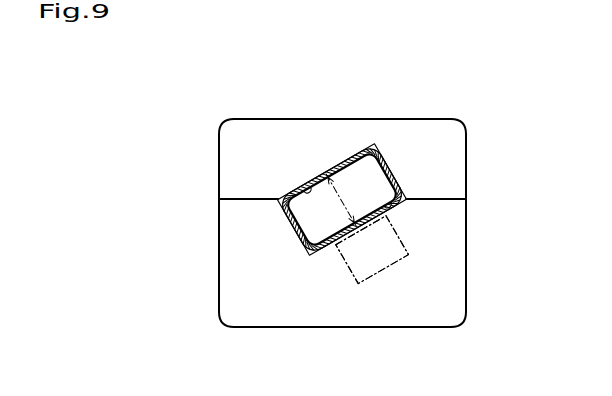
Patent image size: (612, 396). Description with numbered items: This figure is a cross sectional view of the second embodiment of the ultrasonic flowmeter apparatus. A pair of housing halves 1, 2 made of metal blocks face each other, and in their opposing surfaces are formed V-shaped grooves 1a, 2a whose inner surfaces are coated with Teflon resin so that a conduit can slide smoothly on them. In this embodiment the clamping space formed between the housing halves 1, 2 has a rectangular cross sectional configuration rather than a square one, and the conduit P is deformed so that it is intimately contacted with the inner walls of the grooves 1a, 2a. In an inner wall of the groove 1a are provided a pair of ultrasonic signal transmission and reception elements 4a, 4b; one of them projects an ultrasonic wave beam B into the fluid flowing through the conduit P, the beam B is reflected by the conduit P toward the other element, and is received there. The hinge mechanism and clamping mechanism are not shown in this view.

The housing half 1 is at (449, 291).
The V-shaped groove 1a is at (403, 202).
The housing half 2 is at (415, 138).
The V-shaped groove 2a is at (296, 190).
The conduit P is at (348, 154).
The ultrasonic wave beam B is at (343, 200).
The ultrasonic signal transmission and reception element 4a is at (375, 258).
The ultrasonic signal transmission and reception element 4b is at (381, 305).